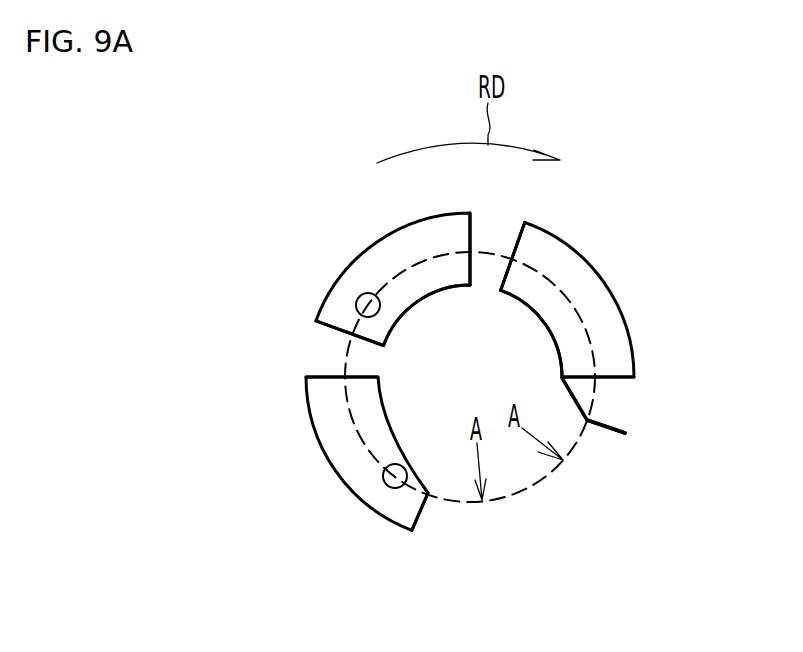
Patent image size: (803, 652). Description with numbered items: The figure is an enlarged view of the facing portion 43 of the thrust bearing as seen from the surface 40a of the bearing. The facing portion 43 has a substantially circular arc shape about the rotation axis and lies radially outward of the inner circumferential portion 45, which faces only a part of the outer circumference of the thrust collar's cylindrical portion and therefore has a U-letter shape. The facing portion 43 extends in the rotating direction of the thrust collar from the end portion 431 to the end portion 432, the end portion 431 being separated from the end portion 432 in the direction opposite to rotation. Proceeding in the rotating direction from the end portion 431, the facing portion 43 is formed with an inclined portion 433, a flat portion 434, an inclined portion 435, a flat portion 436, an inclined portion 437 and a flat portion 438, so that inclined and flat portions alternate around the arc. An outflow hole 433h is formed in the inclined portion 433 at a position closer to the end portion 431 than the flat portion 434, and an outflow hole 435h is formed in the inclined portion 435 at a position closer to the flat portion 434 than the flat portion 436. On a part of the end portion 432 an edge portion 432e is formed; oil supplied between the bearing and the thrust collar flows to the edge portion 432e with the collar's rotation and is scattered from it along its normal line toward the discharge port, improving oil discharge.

The surface 40a is at (570, 218).
The facing portion 43 is at (622, 255).
The end portion 431 is at (420, 515).
The end portion 432 is at (562, 402).
The edge portion 432e is at (592, 422).
The inclined portion 433 is at (323, 407).
The outflow hole 433h is at (384, 481).
The flat portion 434 is at (327, 352).
The inclined portion 435 is at (410, 243).
The outflow hole 435h is at (358, 299).
The flat portion 436 is at (495, 240).
The inclined portion 437 is at (593, 317).
The flat portion 438 is at (615, 392).
The inner circumferential portion 45 is at (402, 322).